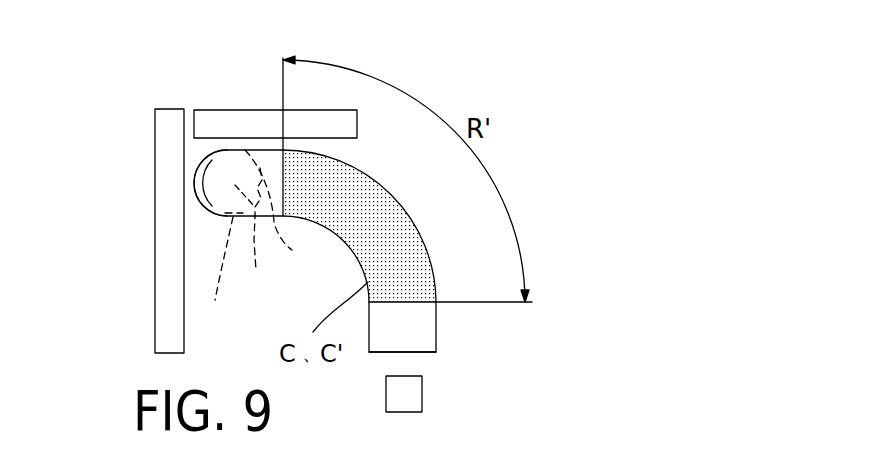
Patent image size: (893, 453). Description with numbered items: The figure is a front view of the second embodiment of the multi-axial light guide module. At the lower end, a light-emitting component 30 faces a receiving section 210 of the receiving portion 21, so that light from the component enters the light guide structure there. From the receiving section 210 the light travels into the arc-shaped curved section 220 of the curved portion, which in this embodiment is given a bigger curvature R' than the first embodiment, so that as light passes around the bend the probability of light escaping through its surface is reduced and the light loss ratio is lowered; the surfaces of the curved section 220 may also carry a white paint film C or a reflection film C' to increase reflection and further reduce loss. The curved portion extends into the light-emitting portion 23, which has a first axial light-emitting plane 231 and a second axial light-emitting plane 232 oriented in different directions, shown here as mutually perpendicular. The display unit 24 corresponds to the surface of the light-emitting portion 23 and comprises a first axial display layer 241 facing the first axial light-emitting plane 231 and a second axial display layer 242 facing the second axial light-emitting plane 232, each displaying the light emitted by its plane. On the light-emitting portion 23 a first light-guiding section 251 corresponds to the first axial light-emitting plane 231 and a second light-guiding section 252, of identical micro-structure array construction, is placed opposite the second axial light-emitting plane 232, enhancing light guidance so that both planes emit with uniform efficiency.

The receiving portion 21 is at (423, 327).
The receiving section 210 is at (422, 353).
The curved section 220 is at (385, 212).
The light-emitting portion 23 is at (257, 236).
The first axial light-emitting plane 231 is at (231, 150).
The second axial light-emitting plane 232 is at (197, 184).
The display unit 24 is at (38, 127).
The first axial display layer 241 is at (218, 118).
The second axial display layer 242 is at (167, 137).
The first light-guiding section 251 is at (222, 276).
The second light-guiding section 252 is at (292, 214).
The light-emitting component 30 is at (412, 390).